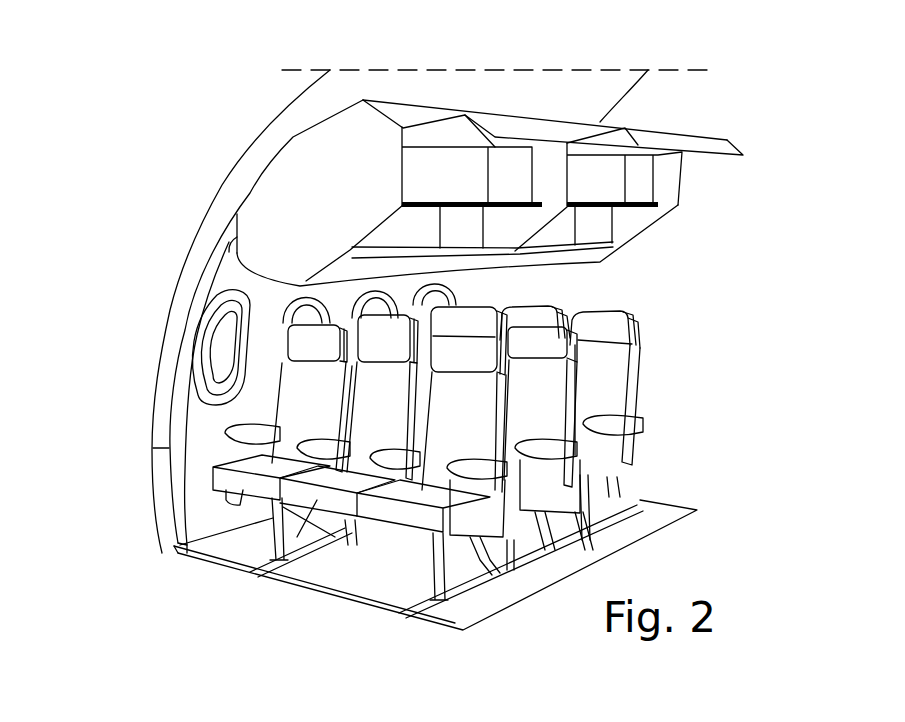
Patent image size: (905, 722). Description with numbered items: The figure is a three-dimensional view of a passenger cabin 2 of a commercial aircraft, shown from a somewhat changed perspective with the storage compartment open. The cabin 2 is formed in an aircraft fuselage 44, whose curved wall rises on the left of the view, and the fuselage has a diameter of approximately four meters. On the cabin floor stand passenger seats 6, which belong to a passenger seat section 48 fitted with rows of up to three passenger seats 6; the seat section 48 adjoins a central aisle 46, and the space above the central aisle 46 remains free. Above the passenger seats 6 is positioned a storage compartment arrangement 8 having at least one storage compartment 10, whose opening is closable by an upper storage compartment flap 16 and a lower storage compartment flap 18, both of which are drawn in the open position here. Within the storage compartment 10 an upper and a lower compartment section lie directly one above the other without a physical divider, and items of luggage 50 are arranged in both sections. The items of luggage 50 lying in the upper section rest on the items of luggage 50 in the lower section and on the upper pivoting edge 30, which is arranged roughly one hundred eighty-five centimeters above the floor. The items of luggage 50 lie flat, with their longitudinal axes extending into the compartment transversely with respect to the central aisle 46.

The passenger cabin 2 is at (786, 194).
The passenger seats 6 is at (620, 357).
The storage compartment arrangement 8 is at (487, 93).
The storage compartment 10 is at (283, 178).
The upper storage compartment flap 16 is at (710, 148).
The lower storage compartment flap 18 is at (342, 266).
The upper pivoting edge 30 is at (417, 202).
The aircraft fuselage 44 is at (160, 468).
The central aisle 46 is at (684, 506).
The passenger seat sections 48 is at (395, 635).
The items of luggage 50 is at (442, 160).